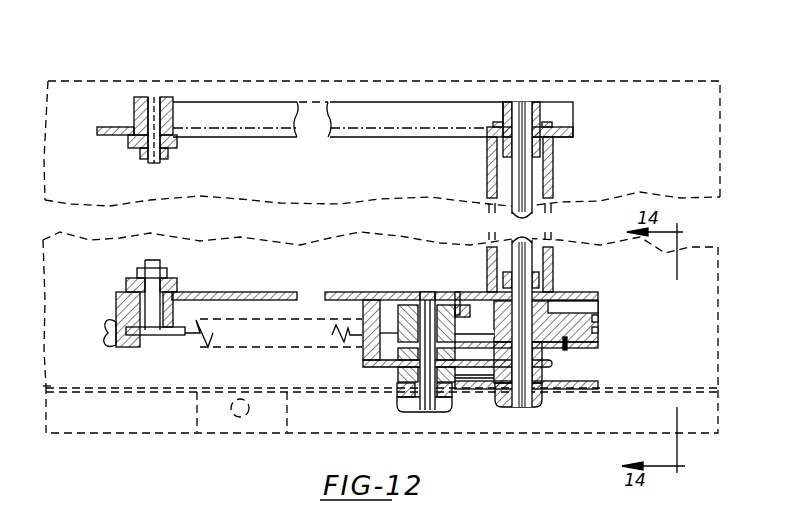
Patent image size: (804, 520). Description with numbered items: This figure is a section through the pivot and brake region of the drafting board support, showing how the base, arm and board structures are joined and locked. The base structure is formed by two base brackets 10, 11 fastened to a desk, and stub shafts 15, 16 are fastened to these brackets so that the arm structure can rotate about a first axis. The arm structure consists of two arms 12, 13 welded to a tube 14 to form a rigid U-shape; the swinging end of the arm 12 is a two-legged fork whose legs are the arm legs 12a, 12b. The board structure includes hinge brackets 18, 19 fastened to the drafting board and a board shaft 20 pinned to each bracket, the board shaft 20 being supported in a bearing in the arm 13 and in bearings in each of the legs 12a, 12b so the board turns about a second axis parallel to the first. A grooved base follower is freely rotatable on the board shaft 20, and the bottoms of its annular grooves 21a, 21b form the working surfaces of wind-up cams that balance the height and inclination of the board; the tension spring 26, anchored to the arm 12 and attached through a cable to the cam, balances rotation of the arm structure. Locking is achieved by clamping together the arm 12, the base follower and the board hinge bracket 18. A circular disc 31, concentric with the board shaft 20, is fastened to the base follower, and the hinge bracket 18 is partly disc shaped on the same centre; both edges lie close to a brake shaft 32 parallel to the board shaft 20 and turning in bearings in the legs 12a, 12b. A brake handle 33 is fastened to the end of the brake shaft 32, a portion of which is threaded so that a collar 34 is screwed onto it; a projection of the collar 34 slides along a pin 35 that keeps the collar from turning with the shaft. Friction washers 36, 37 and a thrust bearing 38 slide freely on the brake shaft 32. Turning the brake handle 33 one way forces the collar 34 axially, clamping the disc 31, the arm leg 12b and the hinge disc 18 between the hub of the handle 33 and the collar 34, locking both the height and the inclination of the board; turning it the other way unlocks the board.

The base bracket 10 is at (172, 281).
The base bracket 11 is at (176, 137).
The arm 12 is at (265, 292).
The arm leg 12a is at (598, 292).
The arm leg 12b is at (553, 364).
The arm 13 is at (279, 137).
The tube 14 is at (553, 166).
The stub shaft 15 is at (146, 262).
The stub shaft 16 is at (148, 112).
The hinge bracket 18 is at (580, 389).
The hinge bracket 19 is at (537, 107).
The board shaft 20 is at (525, 266).
The annular groove 21a is at (598, 333).
The annular groove 21b is at (598, 320).
The tension spring 26 is at (263, 338).
The circular disc 31 is at (602, 345).
The brake shaft 32 is at (417, 306).
The brake handle 33 is at (447, 400).
The collar 34 is at (443, 306).
The pin 35 is at (457, 310).
The friction washer 36 is at (367, 350).
The friction washer 37 is at (398, 377).
The thrust bearing 38 is at (397, 392).